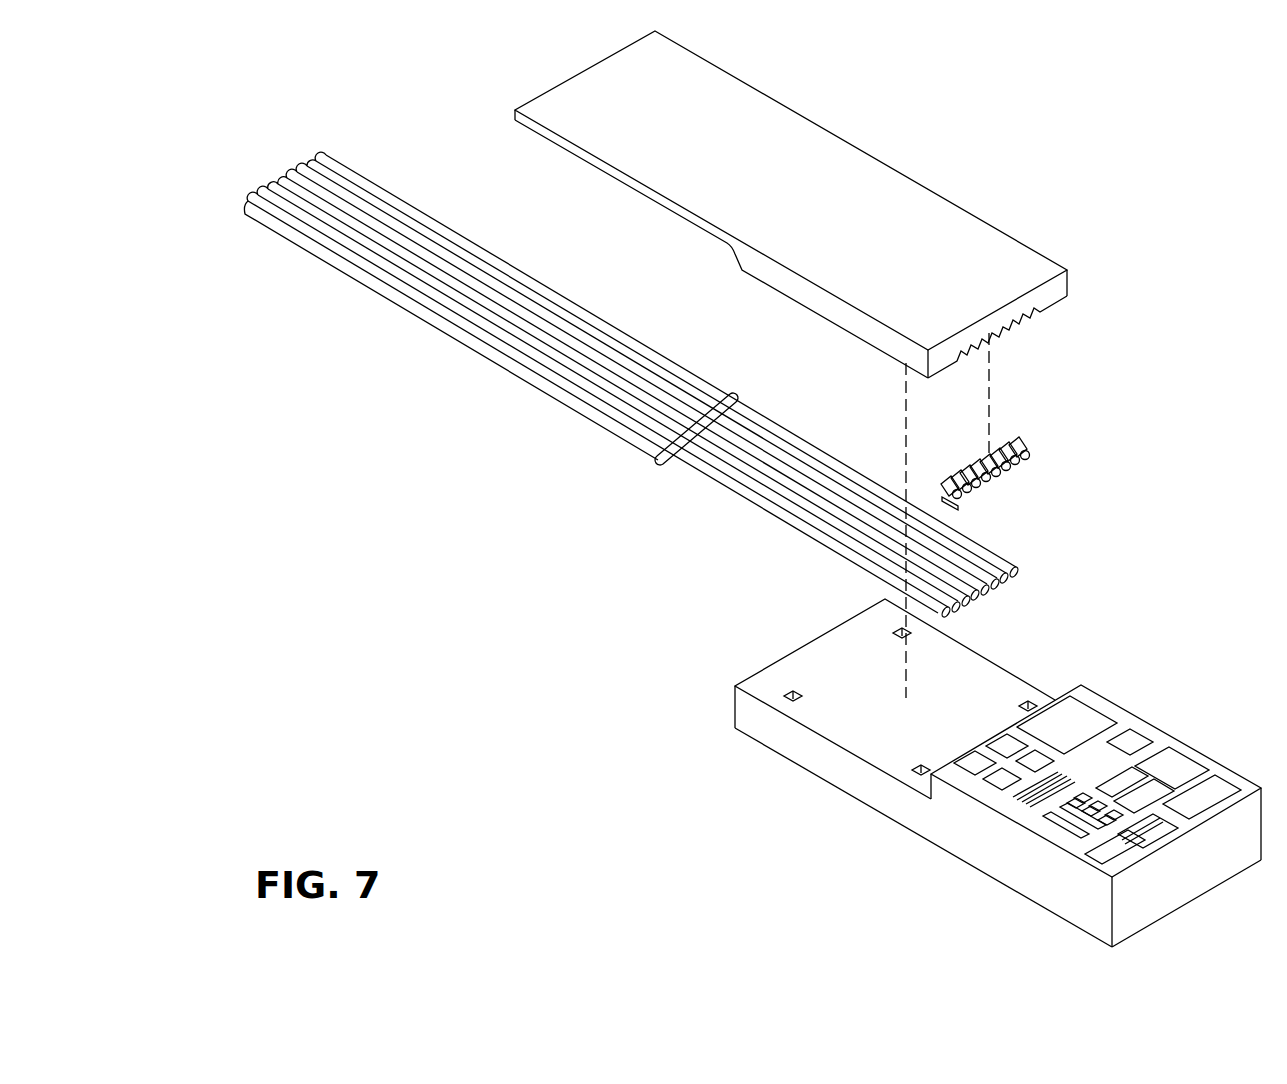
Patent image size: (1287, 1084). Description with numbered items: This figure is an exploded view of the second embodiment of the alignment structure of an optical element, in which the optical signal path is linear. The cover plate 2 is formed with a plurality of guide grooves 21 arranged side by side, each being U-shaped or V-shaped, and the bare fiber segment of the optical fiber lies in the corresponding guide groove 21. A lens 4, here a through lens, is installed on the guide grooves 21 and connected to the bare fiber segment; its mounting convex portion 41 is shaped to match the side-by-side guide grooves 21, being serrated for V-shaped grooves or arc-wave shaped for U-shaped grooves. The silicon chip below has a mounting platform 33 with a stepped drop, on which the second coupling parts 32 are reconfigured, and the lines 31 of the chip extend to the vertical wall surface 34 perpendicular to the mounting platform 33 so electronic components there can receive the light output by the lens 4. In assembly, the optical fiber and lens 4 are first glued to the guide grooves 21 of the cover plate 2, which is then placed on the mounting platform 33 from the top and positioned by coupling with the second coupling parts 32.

The cover plate 2 is at (837, 220).
The guide groove 21 is at (1023, 313).
The lens 4 is at (1011, 449).
The mounting convex portion 41 is at (1022, 448).
The lines 31 is at (1015, 795).
The second coupling parts 32 is at (788, 696).
The mounting platform 33 is at (825, 662).
The vertical wall surface 34 is at (921, 790).